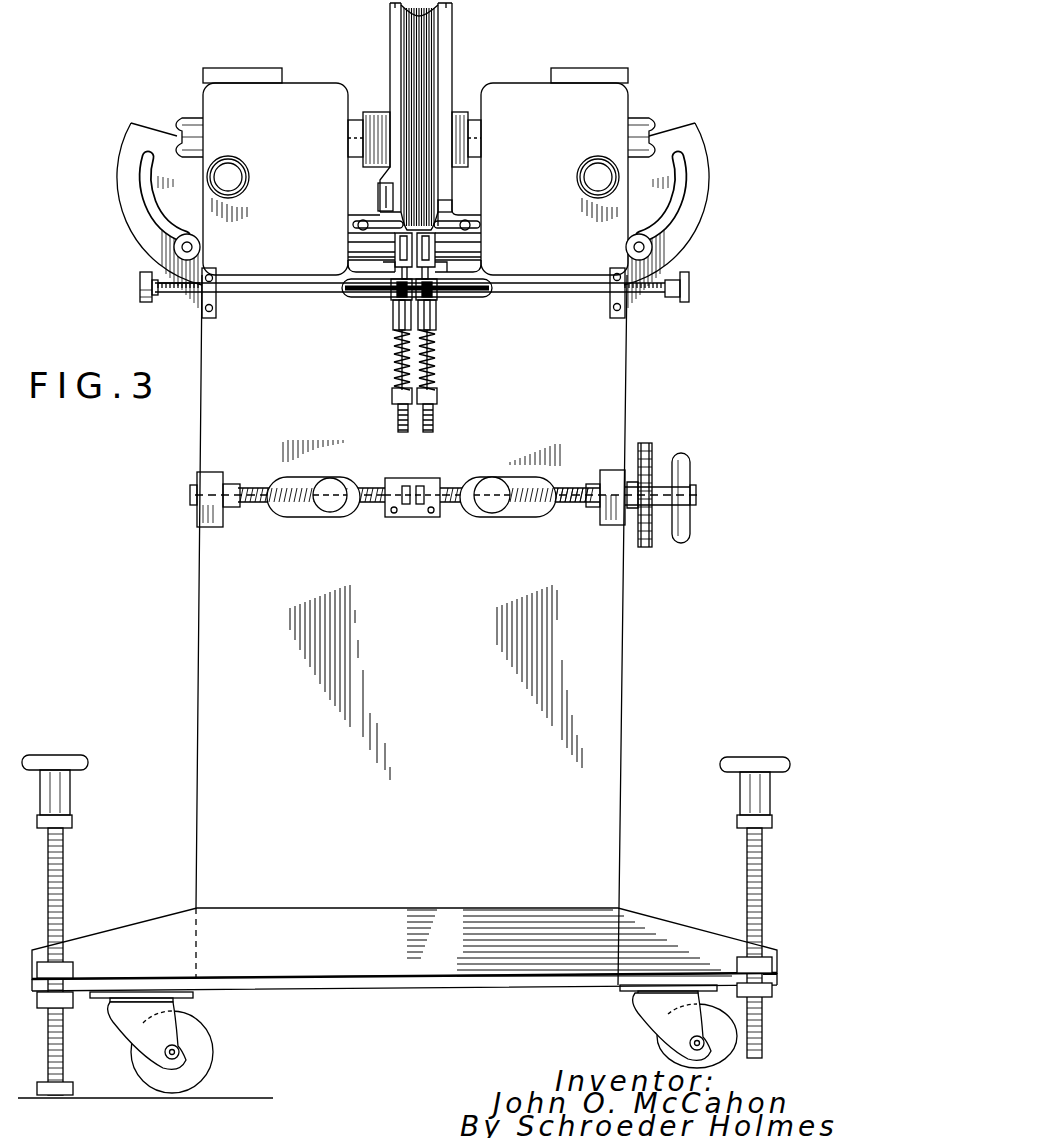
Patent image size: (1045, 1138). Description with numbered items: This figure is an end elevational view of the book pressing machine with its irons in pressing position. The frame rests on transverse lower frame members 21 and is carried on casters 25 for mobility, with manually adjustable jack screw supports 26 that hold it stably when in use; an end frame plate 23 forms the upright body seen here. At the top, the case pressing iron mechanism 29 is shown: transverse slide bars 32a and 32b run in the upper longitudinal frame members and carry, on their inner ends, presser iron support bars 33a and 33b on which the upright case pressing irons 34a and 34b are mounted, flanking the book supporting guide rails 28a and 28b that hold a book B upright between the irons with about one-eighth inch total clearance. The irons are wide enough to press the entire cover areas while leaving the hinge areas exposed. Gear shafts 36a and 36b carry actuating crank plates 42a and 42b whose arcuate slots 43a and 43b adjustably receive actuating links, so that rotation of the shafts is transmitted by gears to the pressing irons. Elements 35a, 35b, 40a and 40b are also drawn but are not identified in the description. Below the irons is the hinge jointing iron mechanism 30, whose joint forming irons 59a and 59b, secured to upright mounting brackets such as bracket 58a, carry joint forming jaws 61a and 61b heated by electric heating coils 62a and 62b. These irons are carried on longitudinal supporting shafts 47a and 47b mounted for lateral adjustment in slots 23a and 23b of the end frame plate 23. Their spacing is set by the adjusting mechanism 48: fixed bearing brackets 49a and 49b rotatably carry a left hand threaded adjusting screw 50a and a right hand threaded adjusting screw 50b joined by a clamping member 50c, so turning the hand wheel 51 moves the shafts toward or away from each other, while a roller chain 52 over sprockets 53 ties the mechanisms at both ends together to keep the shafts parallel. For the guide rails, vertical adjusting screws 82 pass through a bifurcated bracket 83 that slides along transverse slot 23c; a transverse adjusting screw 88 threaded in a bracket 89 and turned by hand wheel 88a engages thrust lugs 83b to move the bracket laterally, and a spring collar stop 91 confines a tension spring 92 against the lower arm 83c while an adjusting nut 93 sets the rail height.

The book B is at (407, 18).
The transverse lower frame member 21 is at (130, 928).
The end frame plate 23 is at (622, 368).
The slot 23a is at (283, 482).
The slot 23b is at (542, 480).
The transverse slot 23c is at (480, 277).
The caster 25 is at (213, 1028).
The jack screw support 26 is at (72, 753).
The book supporting guide rail 28a is at (348, 245).
The book supporting guide rail 28b is at (468, 235).
The case pressing iron mechanism 29 is at (465, 63).
The hinge jointing iron mechanism 30 is at (468, 203).
The transverse slide bar 32a is at (349, 140).
The slide bar 32b is at (478, 135).
The presser iron support bar 33a is at (370, 110).
The presser iron support bar 33b is at (462, 110).
The case pressing iron 34a is at (390, 50).
The case pressing iron 34b is at (455, 33).
The head block 35a is at (250, 70).
The head block 35b is at (580, 70).
The gear shaft 36a is at (232, 166).
The gear shaft 36b is at (597, 166).
The knurled knob 40a is at (177, 128).
The knurled knob 40b is at (647, 120).
The actuating crank plate 42a is at (128, 153).
The actuating crank plate 42b is at (700, 133).
The arcuate slot 43a is at (146, 190).
The arcuate slot 43b is at (685, 177).
The longitudinal supporting shaft 47a is at (333, 513).
The longitudinal supporting shaft 47b is at (488, 483).
The adjusting mechanism 48 is at (448, 513).
The fixed bearing bracket 49a is at (205, 478).
The fixed bearing bracket 49b is at (610, 527).
The left hand threaded adjusting screw 50a is at (257, 503).
The right hand threaded adjusting screw 50b is at (577, 507).
The clamping member 50c is at (407, 517).
The hand wheel 51 is at (683, 455).
The roller chain 52 is at (648, 443).
The sprocket 53 is at (645, 548).
The upright mounting bracket 58a is at (147, 303).
The joint forming iron 59a is at (355, 235).
The joint forming iron 59b is at (487, 233).
The joint forming jaw 61a is at (380, 220).
The joint forming jaw 61b is at (452, 220).
The electric heating coil 62a is at (360, 227).
The electric heating coil 62b is at (468, 230).
The vertical adjusting screw 82 is at (400, 323).
The bifurcated bracket 83 is at (392, 313).
The thrust lug 83b is at (392, 297).
The lower arm 83c is at (393, 397).
The transverse adjusting screw 88 is at (180, 292).
The hand wheel 88a is at (685, 277).
The bracket 89 is at (217, 273).
The spring collar stop 91 is at (437, 340).
The tension spring 92 is at (395, 347).
The adjusting nut 93 is at (398, 410).